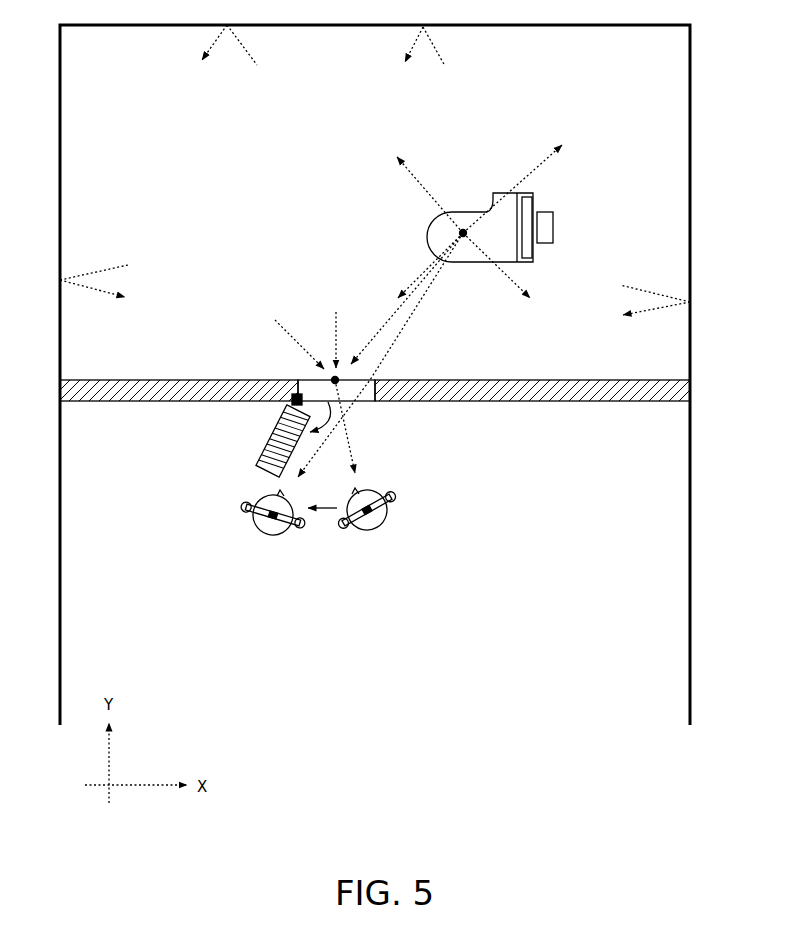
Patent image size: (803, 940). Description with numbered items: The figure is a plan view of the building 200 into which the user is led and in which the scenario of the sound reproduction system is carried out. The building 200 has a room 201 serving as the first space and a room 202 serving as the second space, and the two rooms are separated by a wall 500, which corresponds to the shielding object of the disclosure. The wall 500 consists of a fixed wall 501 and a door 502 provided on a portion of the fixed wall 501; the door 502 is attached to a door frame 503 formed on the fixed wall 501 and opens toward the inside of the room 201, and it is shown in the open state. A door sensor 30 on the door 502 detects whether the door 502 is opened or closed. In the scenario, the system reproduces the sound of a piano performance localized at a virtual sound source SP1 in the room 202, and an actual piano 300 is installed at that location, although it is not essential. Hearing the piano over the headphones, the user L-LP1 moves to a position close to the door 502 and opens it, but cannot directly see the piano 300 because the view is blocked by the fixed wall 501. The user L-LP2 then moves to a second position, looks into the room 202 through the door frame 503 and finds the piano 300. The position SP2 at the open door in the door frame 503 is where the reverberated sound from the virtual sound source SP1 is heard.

The building 200 is at (702, 53).
The room 201 is at (78, 490).
The room 202 is at (673, 188).
The piano 300 is at (491, 193).
The virtual sound source SP1 is at (463, 233).
The position SP2 is at (332, 366).
The wall 500 is at (237, 462).
The fixed wall 501 is at (165, 402).
The door 502 is at (266, 452).
The door frame 503 is at (355, 400).
The door sensor 30 is at (293, 395).
The user at position LP1 L-LP1 is at (393, 667).
The user at position LP2 L-LP2 is at (283, 537).